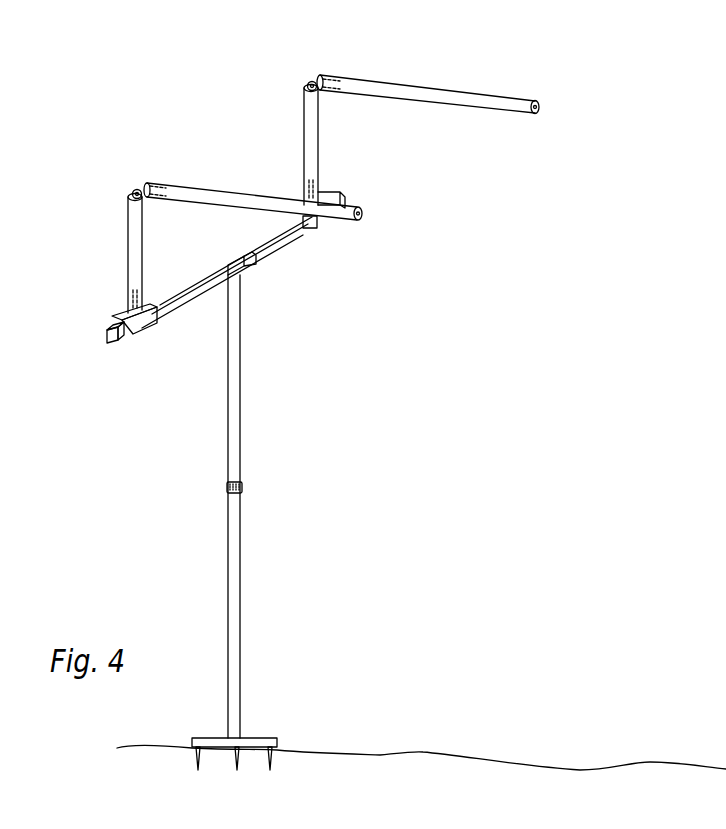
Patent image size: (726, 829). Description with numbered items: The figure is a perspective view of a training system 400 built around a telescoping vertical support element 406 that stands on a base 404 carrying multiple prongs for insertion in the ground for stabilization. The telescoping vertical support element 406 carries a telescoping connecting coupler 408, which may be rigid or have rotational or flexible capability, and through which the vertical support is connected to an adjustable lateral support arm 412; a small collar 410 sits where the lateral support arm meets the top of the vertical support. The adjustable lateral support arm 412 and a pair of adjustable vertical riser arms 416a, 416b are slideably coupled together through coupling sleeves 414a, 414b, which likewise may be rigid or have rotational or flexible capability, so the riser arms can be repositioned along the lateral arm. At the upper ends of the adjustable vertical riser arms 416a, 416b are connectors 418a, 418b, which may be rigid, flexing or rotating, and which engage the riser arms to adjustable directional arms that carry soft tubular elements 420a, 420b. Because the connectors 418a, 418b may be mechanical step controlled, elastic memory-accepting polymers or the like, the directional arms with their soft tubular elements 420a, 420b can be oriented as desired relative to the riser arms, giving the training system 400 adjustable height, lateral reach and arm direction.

The training system 400 is at (152, 424).
The base 404 is at (258, 738).
The telescoping vertical support element 406 is at (241, 577).
The telescoping connecting coupler 408 is at (243, 486).
The collar 410 is at (250, 262).
The adjustable lateral support arm 412 is at (200, 300).
The coupling sleeve 414a is at (120, 314).
The coupling sleeve 414b is at (330, 194).
The adjustable vertical riser arm 416a is at (135, 254).
The adjustable vertical riser arm 416b is at (320, 118).
The connector 418a is at (134, 190).
The connector 418b is at (312, 81).
The soft tubular element 420a is at (200, 187).
The soft tubular element 420b is at (403, 83).